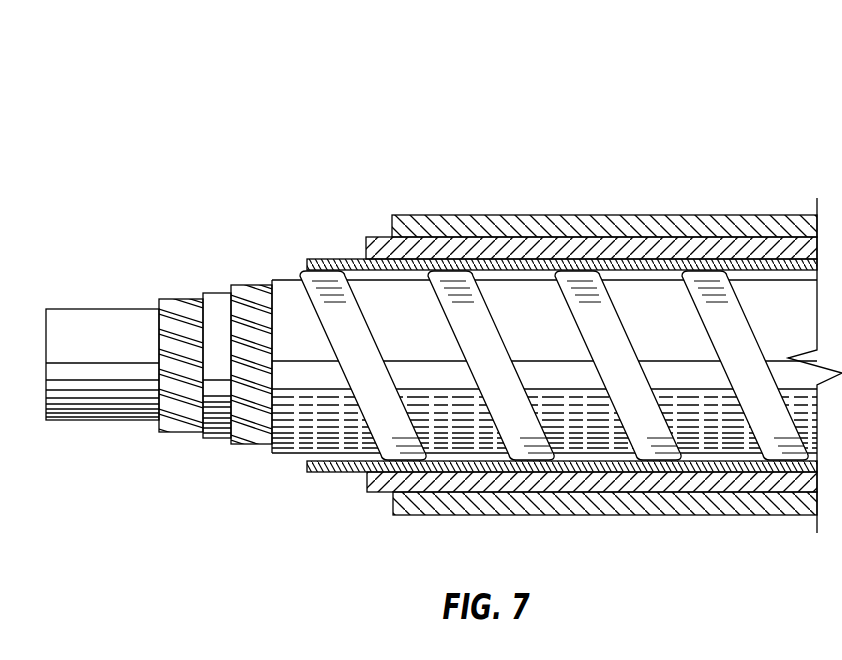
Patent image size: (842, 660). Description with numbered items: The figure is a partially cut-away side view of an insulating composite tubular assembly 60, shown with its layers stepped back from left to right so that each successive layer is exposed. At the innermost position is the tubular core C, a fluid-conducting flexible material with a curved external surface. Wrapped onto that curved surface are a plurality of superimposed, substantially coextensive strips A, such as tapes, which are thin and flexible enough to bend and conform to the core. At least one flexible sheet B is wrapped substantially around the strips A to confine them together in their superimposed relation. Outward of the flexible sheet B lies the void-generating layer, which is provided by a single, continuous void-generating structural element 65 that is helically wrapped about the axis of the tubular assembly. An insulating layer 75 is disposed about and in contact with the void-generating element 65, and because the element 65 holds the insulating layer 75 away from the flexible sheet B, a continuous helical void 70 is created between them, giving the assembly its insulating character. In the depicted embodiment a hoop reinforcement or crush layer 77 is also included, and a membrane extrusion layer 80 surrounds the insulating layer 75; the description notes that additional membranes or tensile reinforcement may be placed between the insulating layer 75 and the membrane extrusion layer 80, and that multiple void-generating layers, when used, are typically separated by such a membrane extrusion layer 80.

The insulating composite tubular assembly 60 is at (285, 75).
The void-generating structural element 65 is at (365, 390).
The continuous helical void 70 is at (507, 272).
The insulating layer 75 is at (772, 265).
The hoop reinforcement or crush layer 77 is at (587, 250).
The membrane extrusion layer 80 is at (668, 222).
The superimposed substantially coextensive strips A is at (183, 420).
The flexible sheet B is at (213, 300).
The tubular core C is at (108, 407).